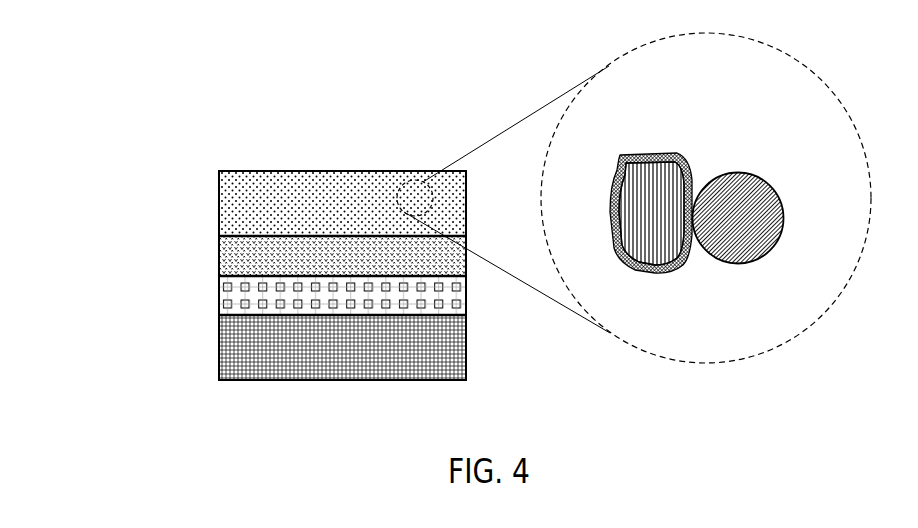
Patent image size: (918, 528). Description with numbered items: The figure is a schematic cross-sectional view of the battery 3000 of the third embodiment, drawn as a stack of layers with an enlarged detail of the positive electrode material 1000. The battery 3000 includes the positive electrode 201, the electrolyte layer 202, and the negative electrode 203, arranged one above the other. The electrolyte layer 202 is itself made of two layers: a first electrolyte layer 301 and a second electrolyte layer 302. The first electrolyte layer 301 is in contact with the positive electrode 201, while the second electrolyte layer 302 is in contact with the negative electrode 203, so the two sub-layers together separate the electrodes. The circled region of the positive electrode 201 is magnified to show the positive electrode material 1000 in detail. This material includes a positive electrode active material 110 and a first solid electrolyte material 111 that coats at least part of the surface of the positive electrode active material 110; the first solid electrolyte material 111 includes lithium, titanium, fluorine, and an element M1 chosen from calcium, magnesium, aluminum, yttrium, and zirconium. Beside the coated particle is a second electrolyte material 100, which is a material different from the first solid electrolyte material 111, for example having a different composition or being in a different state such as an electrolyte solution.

The battery 3000 is at (314, 127).
The positive electrode 201 is at (252, 190).
The electrolyte layer 202 is at (259, 287).
The first electrolyte layer 301 is at (250, 250).
The second electrolyte layer 302 is at (250, 297).
The negative electrode 203 is at (250, 348).
The positive electrode material 1000 is at (729, 125).
The second electrolyte material 100 is at (763, 193).
The positive electrode active material 110 is at (652, 213).
The first solid electrolyte material 111 is at (647, 268).